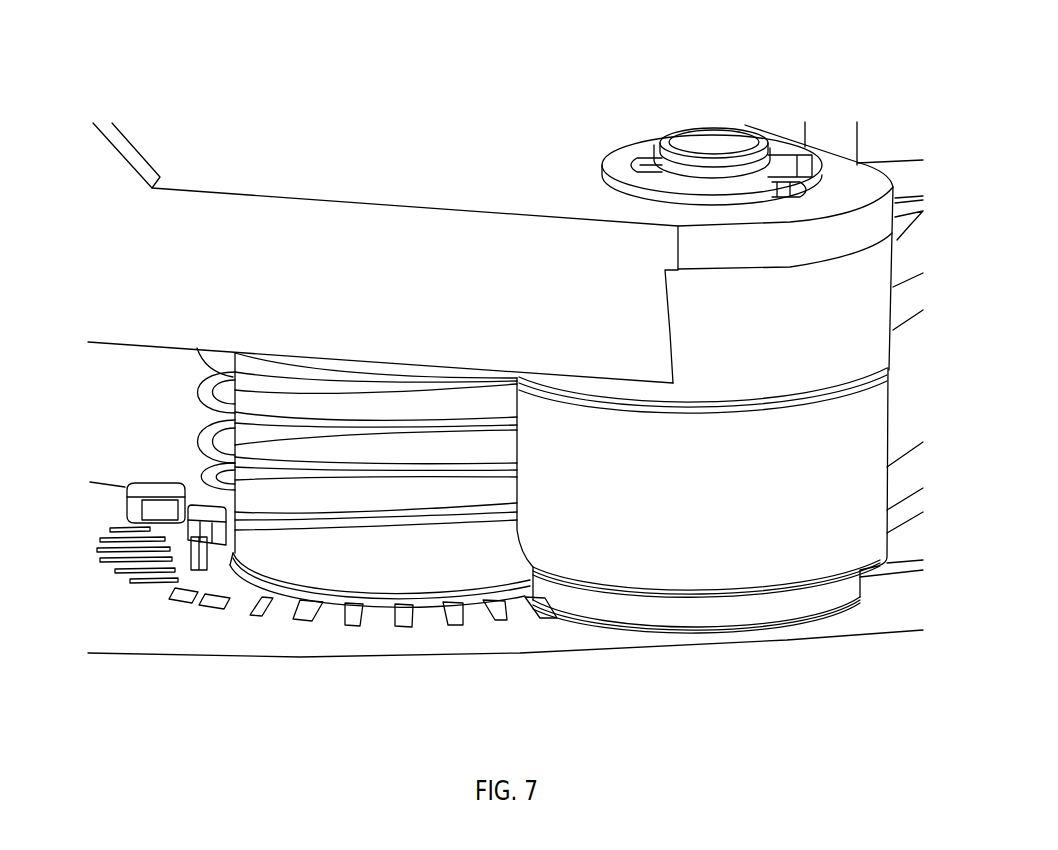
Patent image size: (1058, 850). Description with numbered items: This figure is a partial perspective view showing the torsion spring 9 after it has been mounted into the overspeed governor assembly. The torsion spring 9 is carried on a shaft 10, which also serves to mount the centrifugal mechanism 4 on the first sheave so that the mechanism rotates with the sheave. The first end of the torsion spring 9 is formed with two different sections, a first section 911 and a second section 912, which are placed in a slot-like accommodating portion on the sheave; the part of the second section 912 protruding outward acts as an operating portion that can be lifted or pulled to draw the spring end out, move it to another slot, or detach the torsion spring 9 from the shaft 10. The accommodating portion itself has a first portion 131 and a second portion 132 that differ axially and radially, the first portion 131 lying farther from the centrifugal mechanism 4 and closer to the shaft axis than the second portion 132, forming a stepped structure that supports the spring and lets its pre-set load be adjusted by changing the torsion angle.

The centrifugal mechanism 4 is at (475, 163).
The torsion spring 9 is at (397, 518).
The shaft 10 is at (468, 558).
The first section 911 is at (203, 537).
The second section 912 is at (152, 490).
The first portion 131 is at (197, 540).
The second portion 132 is at (148, 532).